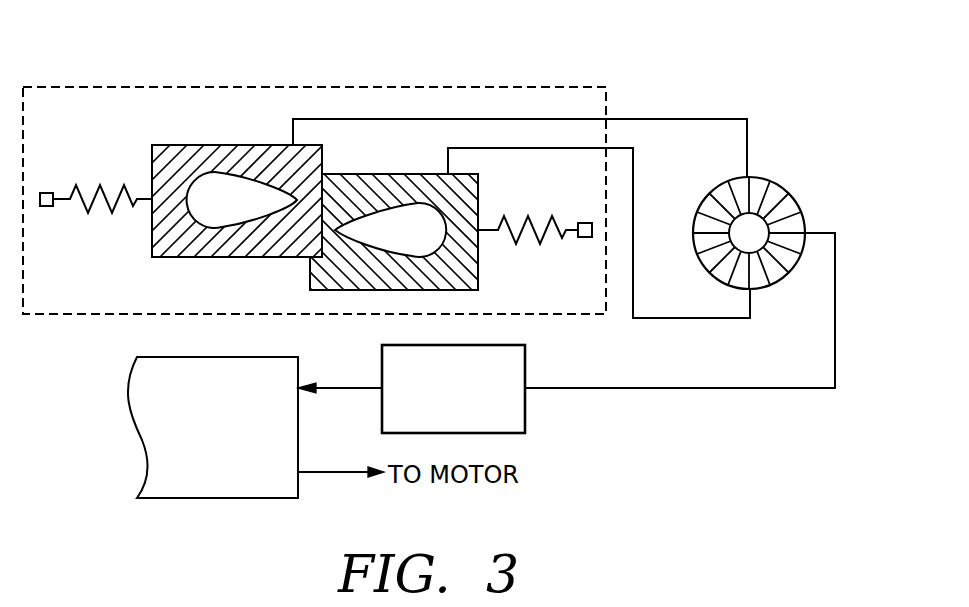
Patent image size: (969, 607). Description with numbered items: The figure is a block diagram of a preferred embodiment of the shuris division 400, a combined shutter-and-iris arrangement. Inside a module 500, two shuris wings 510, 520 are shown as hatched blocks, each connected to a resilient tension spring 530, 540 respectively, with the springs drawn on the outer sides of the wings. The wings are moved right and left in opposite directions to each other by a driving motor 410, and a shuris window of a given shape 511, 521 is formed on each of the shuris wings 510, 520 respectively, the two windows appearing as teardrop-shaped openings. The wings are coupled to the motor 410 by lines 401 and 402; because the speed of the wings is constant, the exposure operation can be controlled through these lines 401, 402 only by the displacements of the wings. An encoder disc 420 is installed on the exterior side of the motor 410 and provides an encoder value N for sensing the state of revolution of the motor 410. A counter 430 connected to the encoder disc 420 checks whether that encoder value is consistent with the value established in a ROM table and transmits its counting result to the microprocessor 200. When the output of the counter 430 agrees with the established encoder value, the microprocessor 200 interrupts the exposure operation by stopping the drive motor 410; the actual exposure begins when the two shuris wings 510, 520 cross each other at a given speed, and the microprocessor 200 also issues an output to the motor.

The microprocessor 200 is at (123, 416).
The shuris division 400 is at (680, 196).
The line 401 is at (645, 119).
The line 402 is at (633, 183).
The driving motor 410 is at (765, 212).
The encoder disc 420 is at (777, 288).
The counter 430 is at (525, 418).
The module 500 is at (90, 86).
The shuris wing 510 is at (237, 179).
The shuris window 511 is at (247, 212).
The shuris wing 520 is at (390, 210).
The shuris window 521 is at (433, 244).
The resilient tension spring 530 is at (92, 185).
The resilient tension spring 540 is at (535, 218).